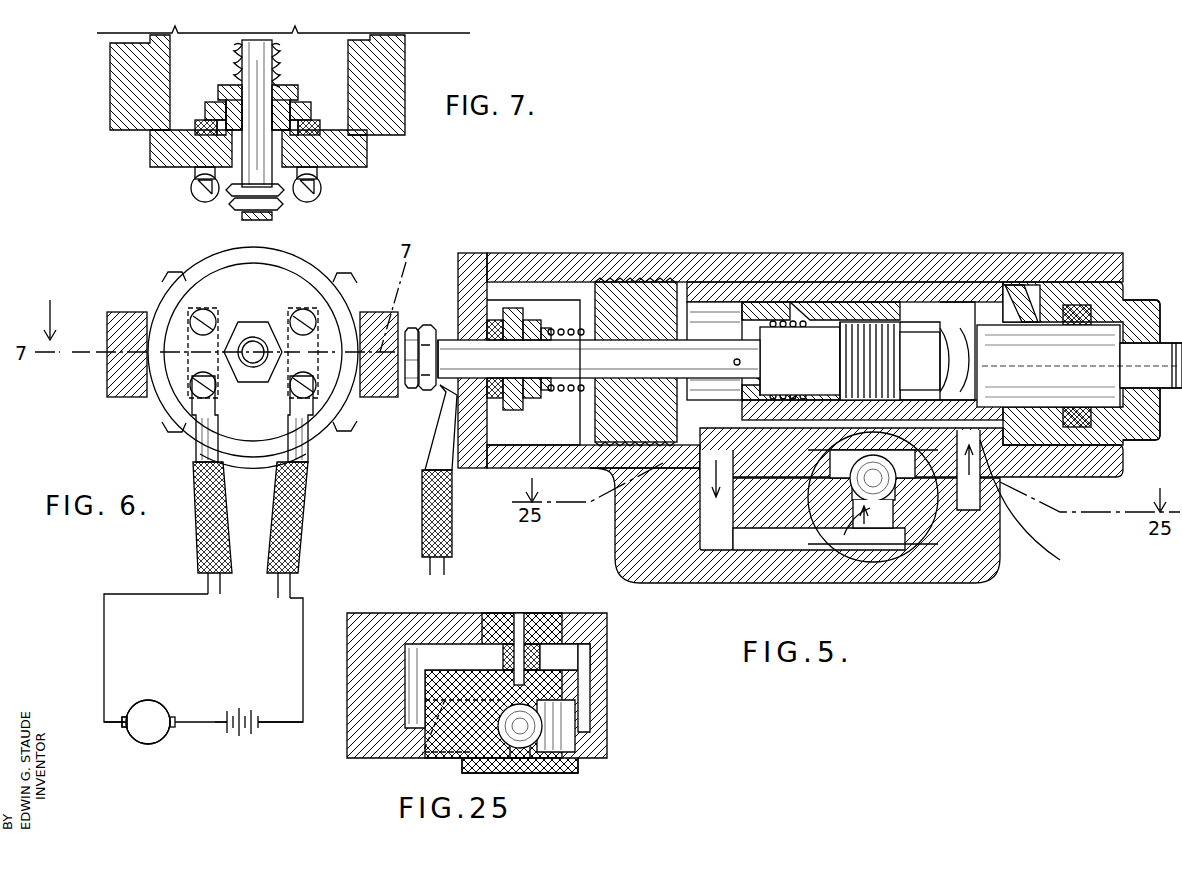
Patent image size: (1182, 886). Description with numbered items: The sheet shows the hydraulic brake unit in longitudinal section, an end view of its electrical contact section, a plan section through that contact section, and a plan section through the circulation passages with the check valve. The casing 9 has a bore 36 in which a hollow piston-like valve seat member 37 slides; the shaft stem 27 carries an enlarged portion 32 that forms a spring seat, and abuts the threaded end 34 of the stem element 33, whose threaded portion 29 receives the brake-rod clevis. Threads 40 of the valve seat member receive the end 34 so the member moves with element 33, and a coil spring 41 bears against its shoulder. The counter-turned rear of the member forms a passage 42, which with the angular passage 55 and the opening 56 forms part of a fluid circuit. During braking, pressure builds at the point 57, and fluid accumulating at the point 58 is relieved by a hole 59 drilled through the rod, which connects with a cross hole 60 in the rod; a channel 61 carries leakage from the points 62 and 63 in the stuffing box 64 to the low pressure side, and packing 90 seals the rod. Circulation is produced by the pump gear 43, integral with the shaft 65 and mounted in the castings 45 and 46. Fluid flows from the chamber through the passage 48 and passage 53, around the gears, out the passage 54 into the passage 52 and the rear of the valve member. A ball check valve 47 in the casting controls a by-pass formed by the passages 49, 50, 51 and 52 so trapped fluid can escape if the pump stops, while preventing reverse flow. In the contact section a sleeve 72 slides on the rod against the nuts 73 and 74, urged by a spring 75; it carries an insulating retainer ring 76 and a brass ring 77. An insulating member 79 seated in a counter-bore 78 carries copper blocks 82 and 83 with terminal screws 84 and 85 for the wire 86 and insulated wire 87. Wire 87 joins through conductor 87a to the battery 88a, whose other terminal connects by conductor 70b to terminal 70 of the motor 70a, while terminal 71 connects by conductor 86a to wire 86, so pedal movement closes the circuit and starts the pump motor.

In FIG. 7, the casing 9 is at (120, 64).
In FIG. 6, the casing 9 is at (170, 395).
In FIG. 5, the casing 9 is at (648, 270).
In FIG. 25, the casing 9 is at (365, 737).
In FIG. 7, the shaft stem 27 is at (262, 100).
In FIG. 6, the shaft stem 27 is at (256, 340).
In FIG. 5, the shaft stem 27 is at (598, 345).
In FIG. 5, the threaded portion 29 is at (1152, 318).
In FIG. 5, the enlarged portion 32 is at (845, 302).
In FIG. 5, the stem element 33 is at (1108, 340).
In FIG. 5, the threaded end 34 is at (985, 352).
In FIG. 5, the bore 36 is at (722, 302).
In FIG. 5, the valve seat member 37 is at (803, 300).
In FIG. 5, the threads 40 is at (905, 315).
In FIG. 5, the coil spring 41 is at (785, 302).
In FIG. 5, the passage 42 is at (866, 305).
In FIG. 25, the pump gear 43 is at (530, 648).
In FIG. 25, the casting 45 is at (497, 625).
In FIG. 5, the casting 46 is at (822, 528).
In FIG. 25, the casting 46 is at (555, 775).
In FIG. 5, the check valve 47 is at (875, 502).
In FIG. 25, the check valve 47 is at (510, 742).
In FIG. 5, the passage 48 is at (707, 513).
In FIG. 25, the passage 48 is at (415, 701).
In FIG. 5, the passage 49 is at (766, 550).
In FIG. 5, the passage 50 is at (883, 510).
In FIG. 25, the passage 50 is at (522, 747).
In FIG. 5, the passage 51 is at (965, 505).
In FIG. 5, the passage 52 is at (1000, 505).
In FIG. 25, the passage 52 is at (580, 712).
In FIG. 25, the passage 53 is at (450, 650).
In FIG. 25, the passage 54 is at (553, 656).
In FIG. 5, the angular passage 55 is at (815, 320).
In FIG. 5, the opening 56 is at (760, 398).
In FIG. 5, the point 57 is at (937, 310).
In FIG. 5, the point 58 is at (882, 305).
In FIG. 5, the hole 59 is at (822, 360).
In FIG. 5, the cross pin 60 is at (735, 366).
In FIG. 5, the channel 61 is at (762, 290).
In FIG. 5, the point 62 is at (1028, 295).
In FIG. 5, the point 63 is at (1046, 300).
In FIG. 5, the stuffing box 64 is at (1082, 302).
In FIG. 25, the shaft 65 is at (590, 686).
In FIG. 6, the terminal 70 is at (168, 735).
In FIG. 6, the motor 70a is at (158, 702).
In FIG. 6, the conductor 70b is at (222, 728).
In FIG. 6, the terminal 71 is at (122, 735).
In FIG. 7, the sleeve 72 is at (230, 110).
In FIG. 5, the sleeve 72 is at (547, 326).
In FIG. 7, the nut 73 is at (224, 208).
In FIG. 5, the nut 73 is at (427, 328).
In FIG. 7, the nut 74 is at (228, 208).
In FIG. 6, the nut 74 is at (262, 388).
In FIG. 5, the nut 74 is at (410, 330).
In FIG. 7, the spring 75 is at (278, 60).
In FIG. 5, the spring 75 is at (562, 310).
In FIG. 7, the insulating retainer ring 76 is at (215, 112).
In FIG. 5, the insulating retainer ring 76 is at (532, 318).
In FIG. 7, the brass ring 77 is at (205, 128).
In FIG. 5, the brass ring 77 is at (497, 300).
In FIG. 7, the counter-bore 78 is at (220, 82).
In FIG. 5, the counter-bore 78 is at (514, 305).
In FIG. 7, the insulating member 79 is at (367, 165).
In FIG. 6, the insulating member 79 is at (255, 460).
In FIG. 5, the insulating member 79 is at (470, 252).
In FIG. 7, the copper block 82 is at (192, 135).
In FIG. 6, the copper block 82 is at (215, 310).
In FIG. 5, the copper block 82 is at (503, 400).
In FIG. 7, the copper block 83 is at (367, 140).
In FIG. 6, the copper block 83 is at (302, 310).
In FIG. 7, the screw 84 is at (192, 188).
In FIG. 6, the screw 84 is at (195, 395).
In FIG. 7, the screw 85 is at (322, 184).
In FIG. 6, the screw 85 is at (312, 390).
In FIG. 6, the wire 86 is at (200, 455).
In FIG. 5, the wire 86 is at (430, 455).
In FIG. 6, the conductor 86a is at (104, 650).
In FIG. 6, the insulated wire 87 is at (305, 458).
In FIG. 6, the conductor 87a is at (303, 600).
In FIG. 6, the battery 88a is at (258, 715).
In FIG. 5, the packing 90 is at (637, 265).